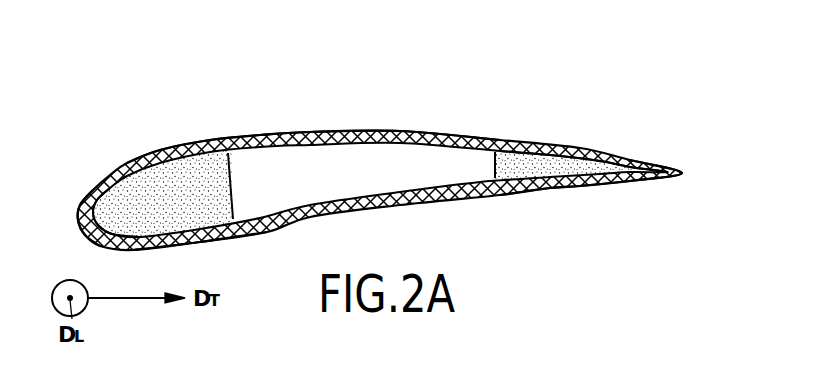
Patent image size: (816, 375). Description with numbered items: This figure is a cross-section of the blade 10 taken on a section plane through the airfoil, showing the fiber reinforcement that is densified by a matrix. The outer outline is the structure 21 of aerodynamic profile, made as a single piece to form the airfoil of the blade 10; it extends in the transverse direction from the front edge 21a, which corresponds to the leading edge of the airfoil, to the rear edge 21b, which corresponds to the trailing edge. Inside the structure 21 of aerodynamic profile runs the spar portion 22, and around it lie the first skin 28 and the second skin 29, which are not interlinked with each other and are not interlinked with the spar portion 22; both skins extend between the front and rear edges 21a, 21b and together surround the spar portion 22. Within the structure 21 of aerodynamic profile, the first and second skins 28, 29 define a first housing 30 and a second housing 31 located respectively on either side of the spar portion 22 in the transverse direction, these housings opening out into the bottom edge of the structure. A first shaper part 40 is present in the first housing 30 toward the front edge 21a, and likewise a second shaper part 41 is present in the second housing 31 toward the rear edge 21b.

The blade 10 is at (381, 142).
The structure of aerodynamic profile 21 is at (300, 131).
The front edge 21a is at (78, 214).
The rear edge 21b is at (683, 173).
The spar portion 22 is at (374, 150).
The first skin 28 is at (218, 232).
The second skin 29 is at (203, 145).
The first housing 30 is at (184, 208).
The second housing 31 is at (555, 160).
The first shaper part 40 is at (123, 161).
The second shaper part 41 is at (566, 145).